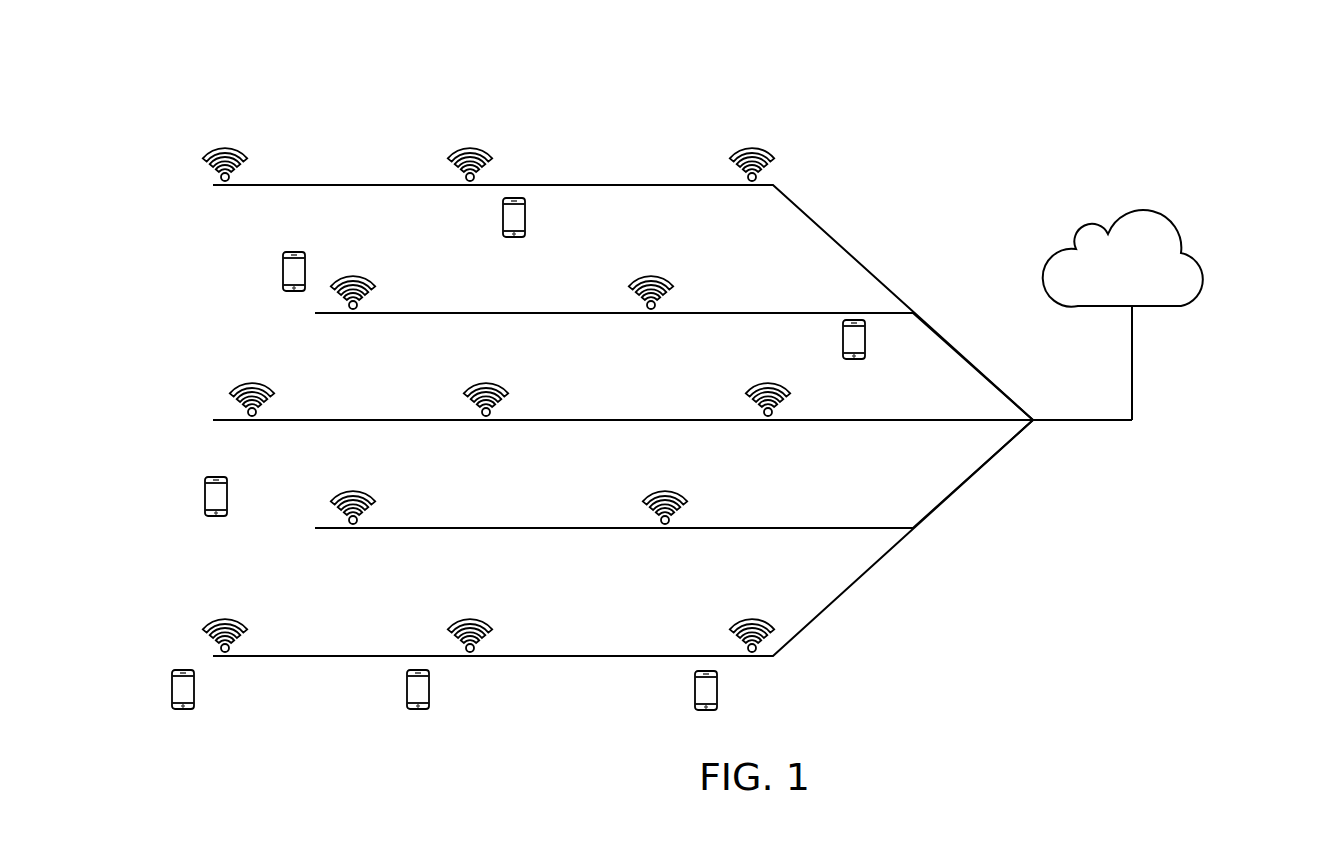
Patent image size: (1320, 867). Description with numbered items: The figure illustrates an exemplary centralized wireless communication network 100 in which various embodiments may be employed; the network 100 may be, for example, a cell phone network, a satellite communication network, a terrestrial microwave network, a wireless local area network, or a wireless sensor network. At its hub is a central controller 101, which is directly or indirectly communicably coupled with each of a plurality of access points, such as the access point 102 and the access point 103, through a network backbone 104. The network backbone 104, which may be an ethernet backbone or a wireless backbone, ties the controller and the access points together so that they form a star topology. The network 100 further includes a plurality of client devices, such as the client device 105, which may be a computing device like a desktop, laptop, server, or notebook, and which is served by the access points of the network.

The centralized wireless communication network 100 is at (1203, 92).
The central controller 101 is at (1143, 212).
The access point 102 is at (223, 145).
The access point 103 is at (468, 146).
The network backbone 104 is at (353, 185).
The client device 105 is at (282, 272).